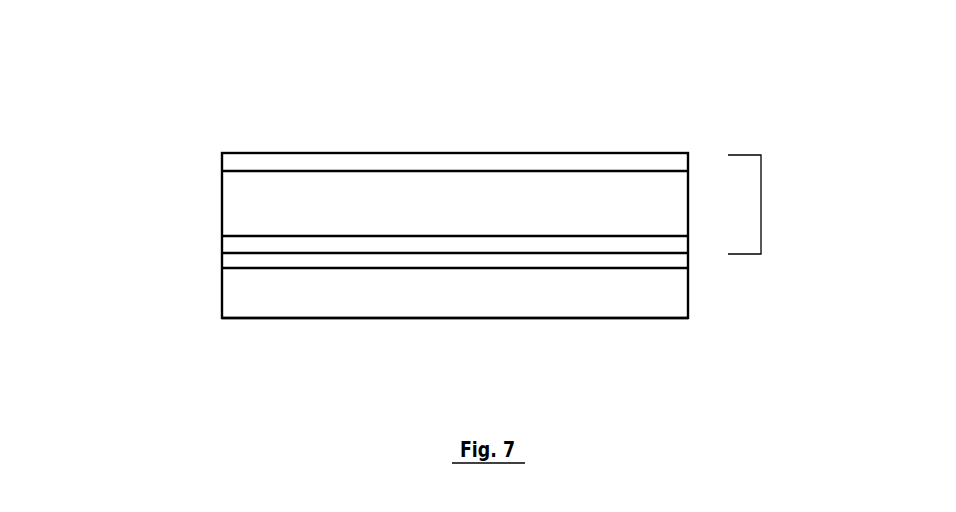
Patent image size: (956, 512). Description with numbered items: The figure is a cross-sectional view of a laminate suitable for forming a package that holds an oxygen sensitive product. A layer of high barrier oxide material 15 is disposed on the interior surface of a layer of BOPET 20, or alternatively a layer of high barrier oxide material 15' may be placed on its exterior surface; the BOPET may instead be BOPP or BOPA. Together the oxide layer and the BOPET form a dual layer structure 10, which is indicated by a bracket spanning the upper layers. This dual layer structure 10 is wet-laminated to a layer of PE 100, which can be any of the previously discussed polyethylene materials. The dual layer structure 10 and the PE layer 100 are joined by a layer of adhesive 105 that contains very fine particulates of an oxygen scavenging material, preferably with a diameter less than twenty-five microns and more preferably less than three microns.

The dual layer structure 10 is at (761, 204).
The layer of high barrier oxide material 15 is at (465, 132).
The layer of high barrier oxide material 15' is at (455, 90).
The layer of BOPET 20 is at (442, 123).
The layer of PE 100 is at (551, 331).
The layer of adhesive 105 is at (362, 292).